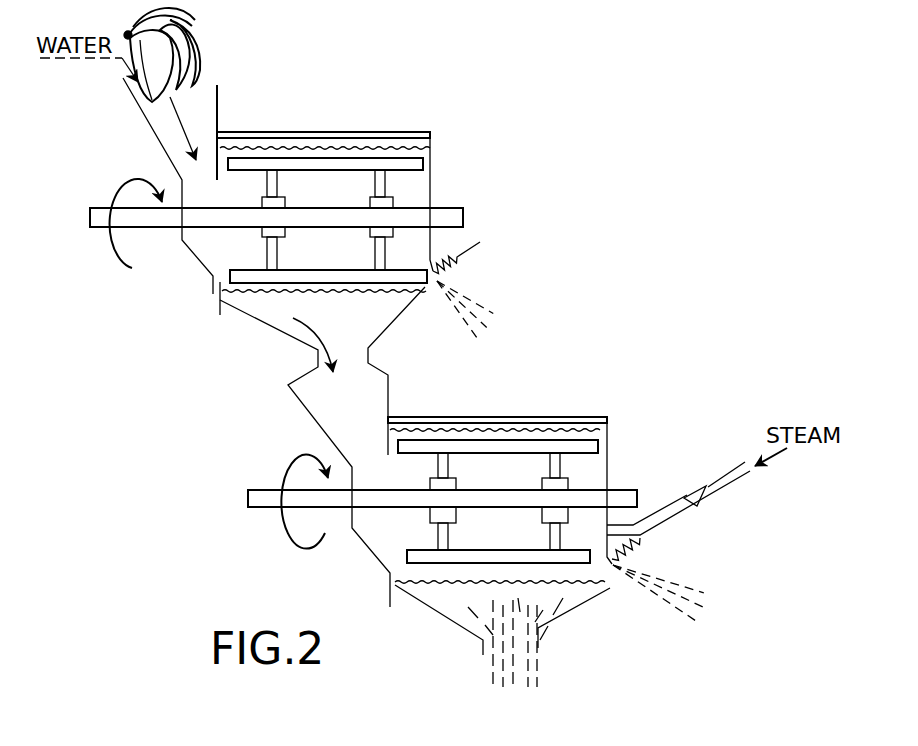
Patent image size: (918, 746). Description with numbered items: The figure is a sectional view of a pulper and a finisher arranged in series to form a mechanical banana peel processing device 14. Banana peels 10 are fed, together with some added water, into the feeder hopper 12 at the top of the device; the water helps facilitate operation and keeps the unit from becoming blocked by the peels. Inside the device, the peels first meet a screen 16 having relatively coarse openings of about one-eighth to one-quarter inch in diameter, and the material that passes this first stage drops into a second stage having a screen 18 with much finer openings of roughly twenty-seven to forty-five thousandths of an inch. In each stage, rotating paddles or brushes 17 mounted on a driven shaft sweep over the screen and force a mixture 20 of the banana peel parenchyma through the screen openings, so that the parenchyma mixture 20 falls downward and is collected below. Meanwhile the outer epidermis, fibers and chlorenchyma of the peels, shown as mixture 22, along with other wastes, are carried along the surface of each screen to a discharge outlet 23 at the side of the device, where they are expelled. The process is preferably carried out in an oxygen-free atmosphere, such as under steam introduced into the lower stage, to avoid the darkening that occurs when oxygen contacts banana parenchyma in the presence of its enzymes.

The banana peels 10 is at (168, 45).
The feeder hopper 12 is at (218, 111).
The mechanical banana peel processing device 14 is at (370, 131).
The screen 16 is at (425, 145).
The rotating paddles or brushes 17 is at (413, 161).
The screen 18 is at (530, 427).
The mixture of banana peel parenchyma 20 is at (510, 657).
The mixture of outer epidermis, fibers and chlorenchyma 22 is at (480, 307).
The discharge outlet 23 is at (430, 273).